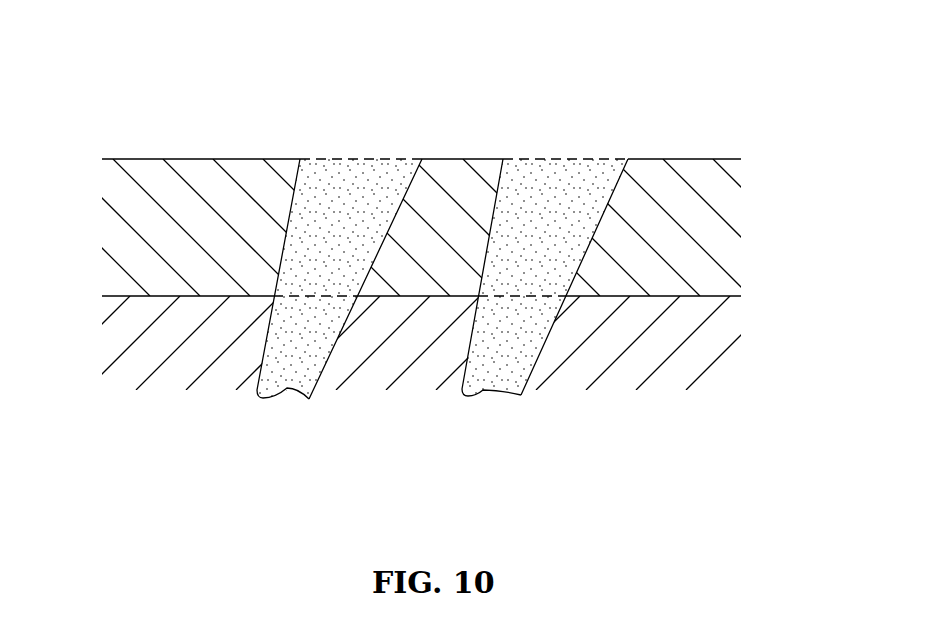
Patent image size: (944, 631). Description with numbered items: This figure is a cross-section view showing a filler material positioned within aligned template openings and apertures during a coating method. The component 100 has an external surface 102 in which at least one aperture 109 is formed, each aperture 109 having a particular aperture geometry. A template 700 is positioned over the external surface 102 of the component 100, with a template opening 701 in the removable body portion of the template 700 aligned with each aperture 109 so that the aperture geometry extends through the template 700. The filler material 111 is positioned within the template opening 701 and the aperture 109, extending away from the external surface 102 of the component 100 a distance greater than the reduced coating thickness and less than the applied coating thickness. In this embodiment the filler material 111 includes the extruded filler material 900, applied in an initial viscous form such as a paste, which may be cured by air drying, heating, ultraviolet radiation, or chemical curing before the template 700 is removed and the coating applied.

The component 100 is at (193, 363).
The external surface 102 is at (710, 296).
The aperture 109 is at (308, 414).
The filler material 111 is at (332, 245).
The template 700 is at (203, 175).
The template opening 701 is at (337, 148).
The extruded filler material 900 is at (368, 182).